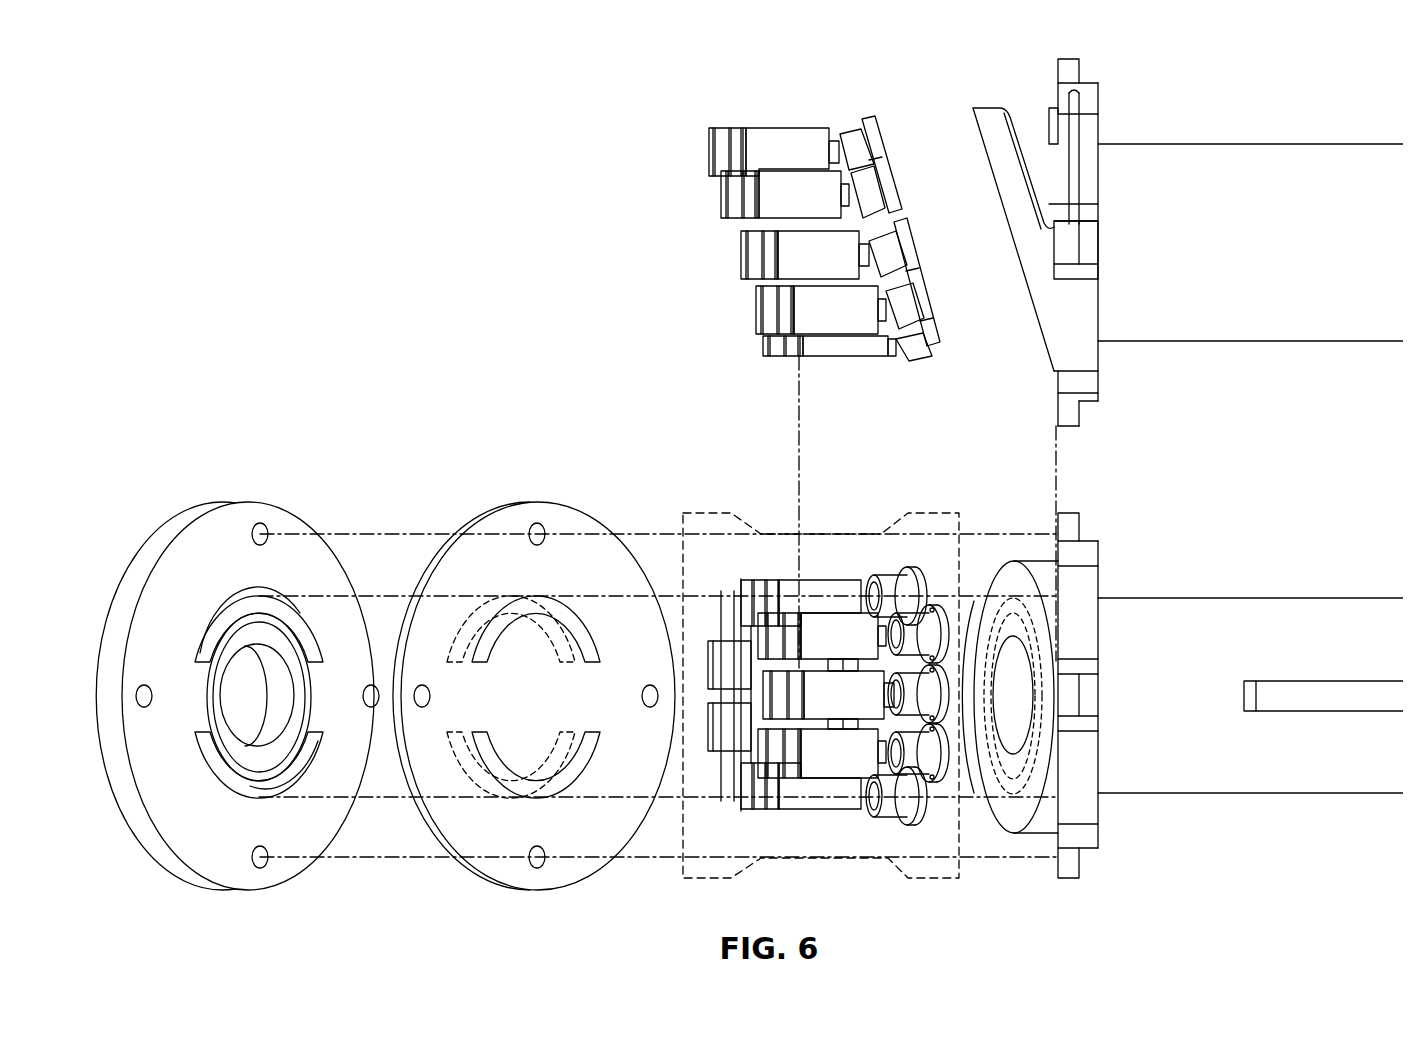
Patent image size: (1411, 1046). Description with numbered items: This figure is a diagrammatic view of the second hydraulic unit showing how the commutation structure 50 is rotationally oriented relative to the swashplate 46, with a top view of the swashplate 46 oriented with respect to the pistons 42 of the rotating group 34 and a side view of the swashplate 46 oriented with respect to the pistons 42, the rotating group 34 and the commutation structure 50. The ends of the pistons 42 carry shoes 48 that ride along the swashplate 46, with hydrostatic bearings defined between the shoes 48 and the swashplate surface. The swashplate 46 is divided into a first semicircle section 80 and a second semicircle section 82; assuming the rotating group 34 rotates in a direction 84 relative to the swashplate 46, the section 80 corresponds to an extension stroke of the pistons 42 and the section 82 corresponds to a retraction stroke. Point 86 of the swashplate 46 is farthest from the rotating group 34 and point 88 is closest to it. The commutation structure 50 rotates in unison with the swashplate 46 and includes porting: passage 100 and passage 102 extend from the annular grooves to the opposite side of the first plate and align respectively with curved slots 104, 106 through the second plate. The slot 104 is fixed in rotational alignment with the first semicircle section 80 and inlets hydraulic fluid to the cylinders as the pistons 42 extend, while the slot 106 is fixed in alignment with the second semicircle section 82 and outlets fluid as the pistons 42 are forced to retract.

The rotating group 34 is at (825, 823).
The pistons 42 is at (781, 127).
The swashplate 46 is at (990, 105).
The shoes 48 is at (864, 117).
The commutation structure 50 is at (403, 870).
The first semicircle section 80 is at (1015, 812).
The second semicircle section 82 is at (1003, 578).
The direction 84 is at (983, 822).
The point 86 is at (1080, 693).
The point 88 is at (975, 692).
The passage 100 is at (268, 766).
The passage 102 is at (261, 600).
The curved slot 104 is at (555, 766).
The curved slot 106 is at (550, 596).